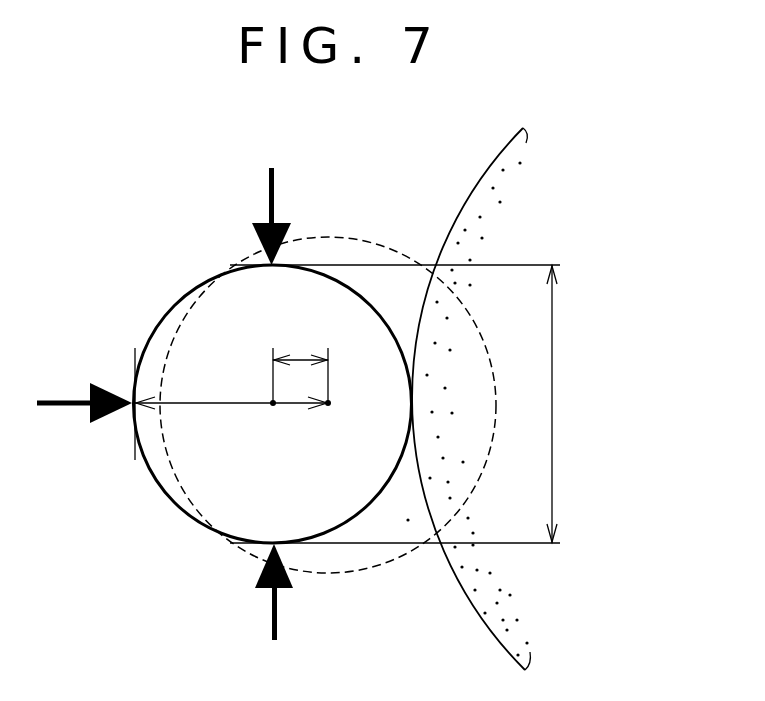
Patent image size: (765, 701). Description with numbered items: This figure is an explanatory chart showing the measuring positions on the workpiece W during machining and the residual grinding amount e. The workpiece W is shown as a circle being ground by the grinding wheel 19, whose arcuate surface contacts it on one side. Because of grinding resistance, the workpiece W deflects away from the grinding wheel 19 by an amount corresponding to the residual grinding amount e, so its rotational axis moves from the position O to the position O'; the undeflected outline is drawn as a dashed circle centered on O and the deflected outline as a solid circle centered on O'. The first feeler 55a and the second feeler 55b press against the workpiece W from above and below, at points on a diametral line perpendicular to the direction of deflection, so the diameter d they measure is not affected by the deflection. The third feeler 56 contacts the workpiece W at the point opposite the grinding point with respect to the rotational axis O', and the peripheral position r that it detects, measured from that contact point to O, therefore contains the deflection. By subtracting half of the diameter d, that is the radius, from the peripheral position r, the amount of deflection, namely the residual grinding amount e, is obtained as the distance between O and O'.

The grinding wheel 19 is at (470, 205).
The first feeler 55a is at (268, 187).
The second feeler 55b is at (272, 612).
The third feeler 56 is at (55, 408).
The workpiece W is at (184, 321).
The diameter d is at (552, 416).
The residual grinding amount e is at (300, 360).
The peripheral position r is at (210, 405).
The rotational axis (undeflected) O is at (323, 437).
The rotational axis (deflected) O' is at (259, 437).